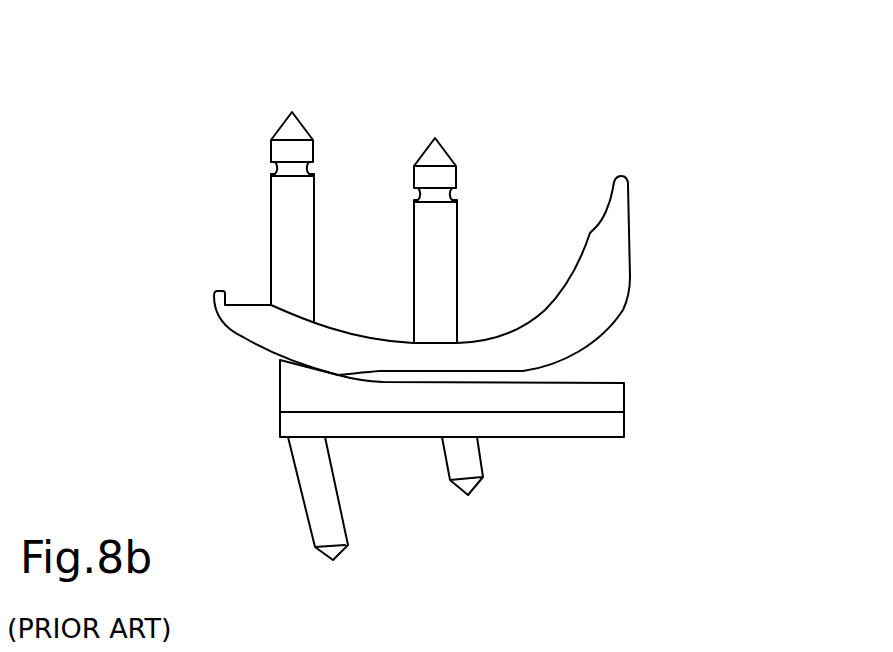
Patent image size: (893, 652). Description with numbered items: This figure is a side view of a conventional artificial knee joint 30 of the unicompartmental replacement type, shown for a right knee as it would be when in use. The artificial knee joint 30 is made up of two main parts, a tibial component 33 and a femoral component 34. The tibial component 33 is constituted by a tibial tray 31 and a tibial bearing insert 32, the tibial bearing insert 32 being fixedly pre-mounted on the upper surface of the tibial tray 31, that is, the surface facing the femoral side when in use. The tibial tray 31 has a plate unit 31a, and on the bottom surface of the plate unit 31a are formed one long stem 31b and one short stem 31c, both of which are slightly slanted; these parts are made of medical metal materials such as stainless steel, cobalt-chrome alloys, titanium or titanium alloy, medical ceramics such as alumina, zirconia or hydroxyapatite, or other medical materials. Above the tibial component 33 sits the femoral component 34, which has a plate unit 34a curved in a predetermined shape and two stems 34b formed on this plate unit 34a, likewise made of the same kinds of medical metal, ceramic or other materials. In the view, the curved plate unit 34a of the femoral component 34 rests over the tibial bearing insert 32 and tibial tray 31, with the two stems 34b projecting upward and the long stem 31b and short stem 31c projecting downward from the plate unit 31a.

The artificial knee joint 30 is at (626, 136).
The tibial tray 31 is at (663, 413).
The plate unit 31a is at (299, 423).
The long stem 31b is at (320, 501).
The short stem 31c is at (470, 463).
The tibial bearing insert 32 is at (665, 363).
The tibial component 33 is at (755, 370).
The femoral component 34 is at (653, 158).
The plate unit 34a is at (275, 325).
The stems 34b is at (287, 225).